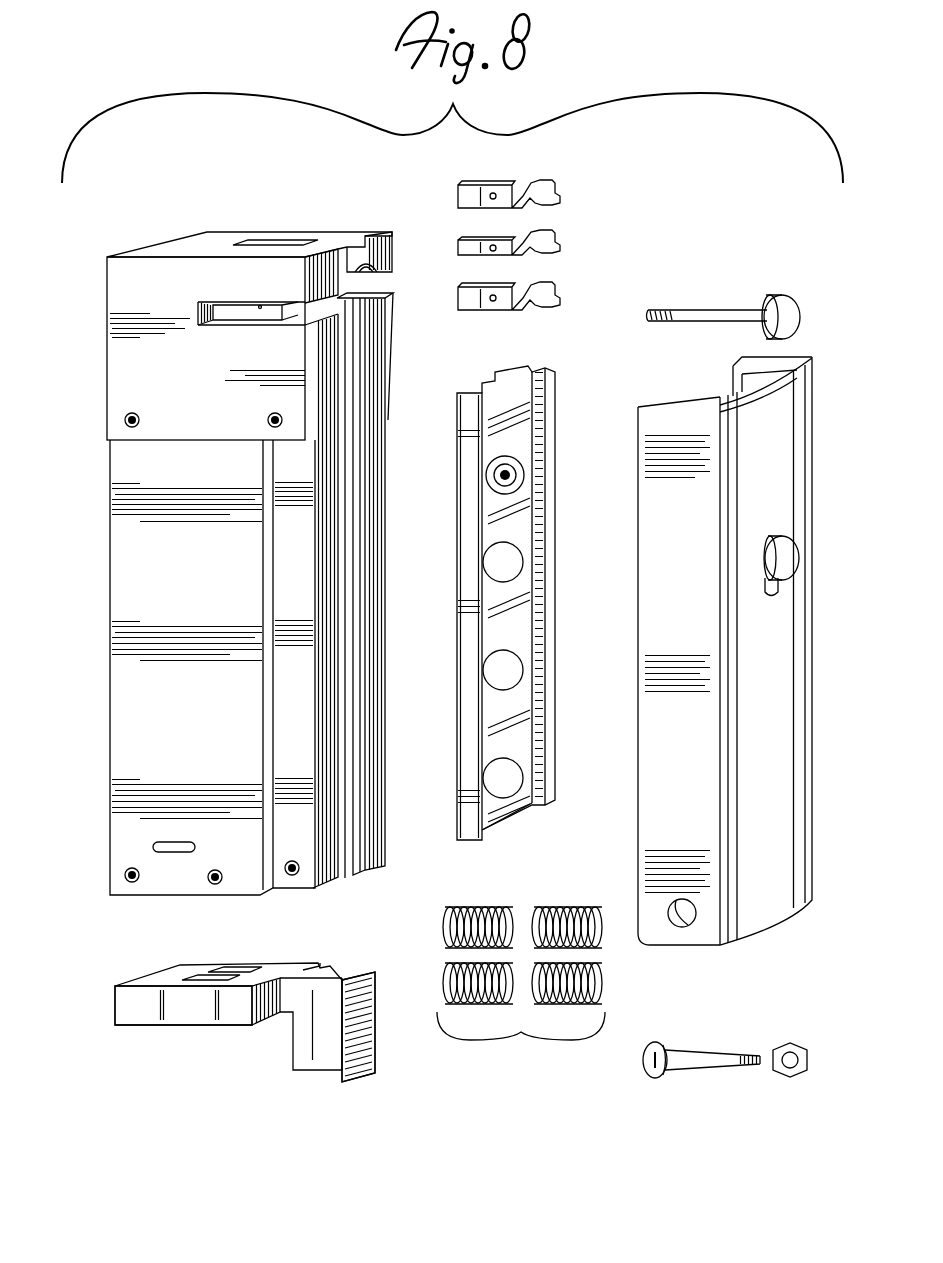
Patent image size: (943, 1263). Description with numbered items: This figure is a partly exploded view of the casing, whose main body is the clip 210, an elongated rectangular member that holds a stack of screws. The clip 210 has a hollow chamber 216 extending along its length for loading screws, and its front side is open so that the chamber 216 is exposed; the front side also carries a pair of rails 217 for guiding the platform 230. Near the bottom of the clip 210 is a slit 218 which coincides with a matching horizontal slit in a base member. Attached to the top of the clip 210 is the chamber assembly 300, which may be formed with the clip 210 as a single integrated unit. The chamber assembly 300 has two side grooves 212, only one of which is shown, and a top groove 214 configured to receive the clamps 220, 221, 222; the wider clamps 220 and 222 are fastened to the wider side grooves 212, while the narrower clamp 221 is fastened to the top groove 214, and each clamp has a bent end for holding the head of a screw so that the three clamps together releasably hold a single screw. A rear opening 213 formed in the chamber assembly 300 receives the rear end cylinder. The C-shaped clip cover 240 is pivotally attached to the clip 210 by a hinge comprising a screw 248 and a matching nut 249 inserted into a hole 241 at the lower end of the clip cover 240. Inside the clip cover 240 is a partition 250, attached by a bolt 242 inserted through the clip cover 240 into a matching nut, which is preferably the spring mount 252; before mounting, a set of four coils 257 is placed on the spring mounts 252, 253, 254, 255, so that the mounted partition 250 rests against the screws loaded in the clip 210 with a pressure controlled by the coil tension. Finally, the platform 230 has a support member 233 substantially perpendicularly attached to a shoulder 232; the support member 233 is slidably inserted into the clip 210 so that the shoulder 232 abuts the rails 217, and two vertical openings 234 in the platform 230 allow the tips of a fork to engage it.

The chamber assembly 300 is at (118, 290).
The top groove 214 is at (285, 245).
The rear opening 213 is at (370, 285).
The side groove 212 is at (228, 312).
The clip 210 is at (100, 576).
The hollow chamber 216 is at (347, 470).
The rails 217 is at (350, 878).
The slit 218 is at (158, 846).
The clamp 220 is at (560, 197).
The clamp 221 is at (560, 247).
The clamp 222 is at (560, 299).
The partition 250 is at (566, 418).
The spring mount 252 is at (520, 465).
The spring mount 253 is at (512, 563).
The spring mount 254 is at (512, 672).
The spring mount 255 is at (512, 780).
The clip cover 240 is at (826, 672).
The bolt 242 is at (790, 560).
The hole 241 is at (682, 915).
The platform 230 is at (100, 992).
The shoulder 232 is at (365, 1037).
The support member 233 is at (190, 1005).
The vertical openings 234 is at (235, 968).
The coils 257 is at (521, 996).
The screw 248 is at (700, 1068).
The nut 249 is at (790, 1078).